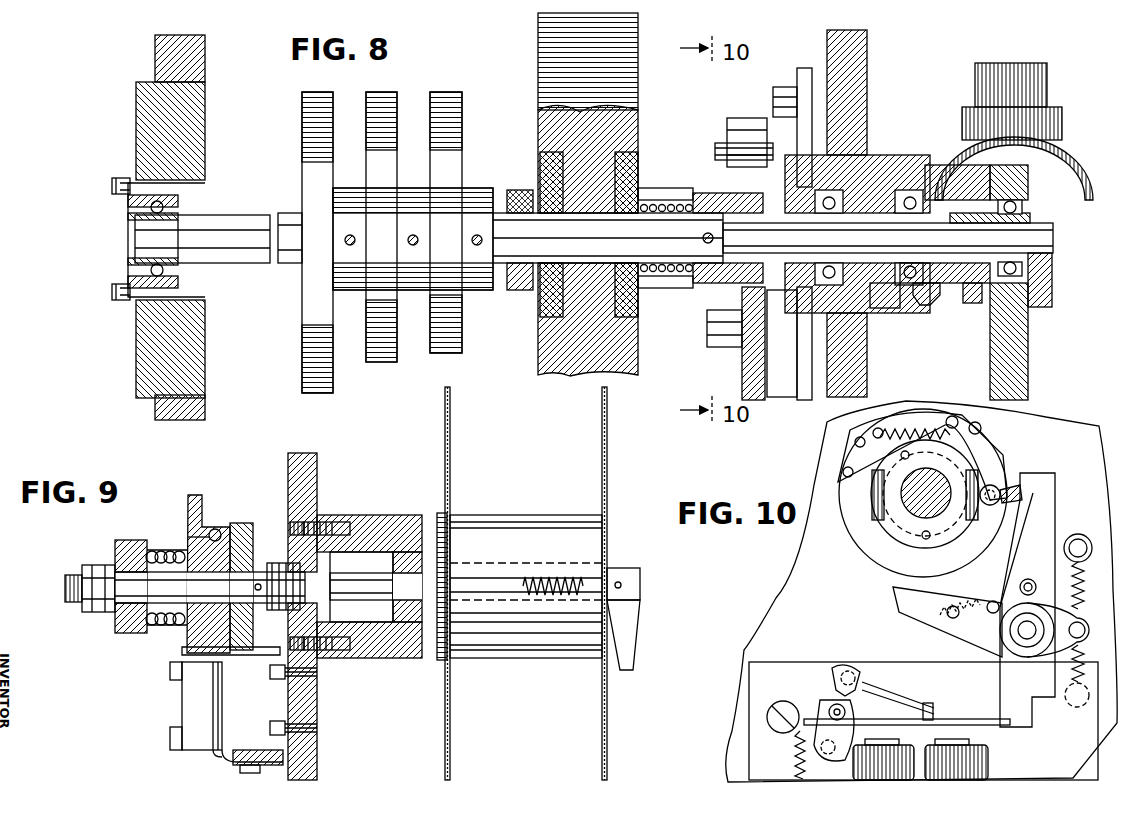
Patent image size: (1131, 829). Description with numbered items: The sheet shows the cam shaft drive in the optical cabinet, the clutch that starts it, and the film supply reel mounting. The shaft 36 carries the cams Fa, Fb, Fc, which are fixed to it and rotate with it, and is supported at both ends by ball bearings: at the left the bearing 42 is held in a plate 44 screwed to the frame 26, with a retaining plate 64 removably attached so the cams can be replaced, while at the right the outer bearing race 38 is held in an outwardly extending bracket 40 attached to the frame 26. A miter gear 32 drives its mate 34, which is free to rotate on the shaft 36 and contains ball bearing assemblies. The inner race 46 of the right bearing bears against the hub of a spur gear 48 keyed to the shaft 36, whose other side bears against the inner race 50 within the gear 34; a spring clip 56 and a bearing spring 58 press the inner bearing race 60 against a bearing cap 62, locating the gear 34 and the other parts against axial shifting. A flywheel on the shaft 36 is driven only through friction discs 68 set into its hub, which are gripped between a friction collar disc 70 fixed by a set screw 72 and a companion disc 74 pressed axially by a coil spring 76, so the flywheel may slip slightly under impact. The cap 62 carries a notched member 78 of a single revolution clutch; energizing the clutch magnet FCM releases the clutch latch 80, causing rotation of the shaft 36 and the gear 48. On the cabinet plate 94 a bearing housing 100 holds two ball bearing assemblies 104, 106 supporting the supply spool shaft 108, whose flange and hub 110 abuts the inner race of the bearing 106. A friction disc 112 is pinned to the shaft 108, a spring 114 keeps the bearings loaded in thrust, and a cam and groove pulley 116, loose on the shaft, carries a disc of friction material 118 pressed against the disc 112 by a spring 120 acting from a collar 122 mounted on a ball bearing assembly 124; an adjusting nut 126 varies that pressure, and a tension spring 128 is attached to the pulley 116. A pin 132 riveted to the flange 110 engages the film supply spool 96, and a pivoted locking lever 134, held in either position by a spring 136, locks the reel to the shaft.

In FIG. 8, the frame 26 is at (155, 62).
In FIG. 8, the bearing 42 is at (128, 205).
In FIG. 8, the plate 44 is at (150, 329).
In FIG. 8, the retaining plate 64 is at (126, 282).
In FIG. 8, the cam Fc is at (312, 100).
In FIG. 8, the cam Fb is at (385, 100).
In FIG. 8, the cam Fa is at (457, 100).
In FIG. 8, the friction discs 68 is at (580, 132).
In FIG. 8, the set screw 72 is at (518, 190).
In FIG. 8, the friction collar disc 70 is at (525, 292).
In FIG. 8, the companion disc 74 is at (643, 188).
In FIG. 8, the coil spring 76 is at (666, 273).
In FIG. 8, the notched member 78 is at (768, 185).
In FIG. 10, the notched member 78 is at (945, 548).
In FIG. 8, the bearing cap 62 is at (862, 145).
In FIG. 10, the bearing cap 62 is at (850, 535).
In FIG. 8, the inner bearing race 60 is at (860, 158).
In FIG. 8, the miter gear 34 is at (935, 168).
In FIG. 8, the spring clip 56 is at (882, 235).
In FIG. 8, the bearing spring 58 is at (885, 305).
In FIG. 8, the inner race 50 is at (925, 306).
In FIG. 8, the spur gear 48 is at (972, 305).
In FIG. 8, the bracket 40 is at (1022, 343).
In FIG. 8, the inner race 46 is at (1053, 268).
In FIG. 8, the shaft 36 is at (1040, 236).
In FIG. 10, the shaft 36 is at (928, 470).
In FIG. 8, the miter gear 32 is at (1060, 132).
In FIG. 8, the outer bearing race 38 is at (1075, 198).
In FIG. 9, the cabinet plate 94 is at (318, 474).
In FIG. 9, the film supply spool 96 is at (607, 478).
In FIG. 9, the bearing housing 100 is at (357, 516).
In FIG. 9, the ball bearing assembly 104 is at (328, 651).
In FIG. 9, the ball bearing assembly 106 is at (403, 640).
In FIG. 9, the supply spool shaft 108 is at (372, 570).
In FIG. 9, the flange and hub 110 is at (443, 520).
In FIG. 9, the friction disc 112 is at (246, 522).
In FIG. 9, the spring 114 is at (283, 562).
In FIG. 9, the cam and groove pulley 116 is at (195, 500).
In FIG. 9, the friction material disc 118 is at (235, 660).
In FIG. 9, the spring 120 is at (165, 627).
In FIG. 9, the collar 122 is at (118, 633).
In FIG. 9, the ball bearing assembly 124 is at (112, 562).
In FIG. 9, the adjusting nut 126 is at (95, 611).
In FIG. 9, the tension spring 128 is at (217, 528).
In FIG. 9, the pin 132 is at (460, 643).
In FIG. 9, the locking lever 134 is at (632, 640).
In FIG. 9, the spring 136 is at (540, 575).
In FIG. 10, the clutch latch 80 is at (1000, 681).
In FIG. 10, the clutch magnet FCM is at (988, 762).